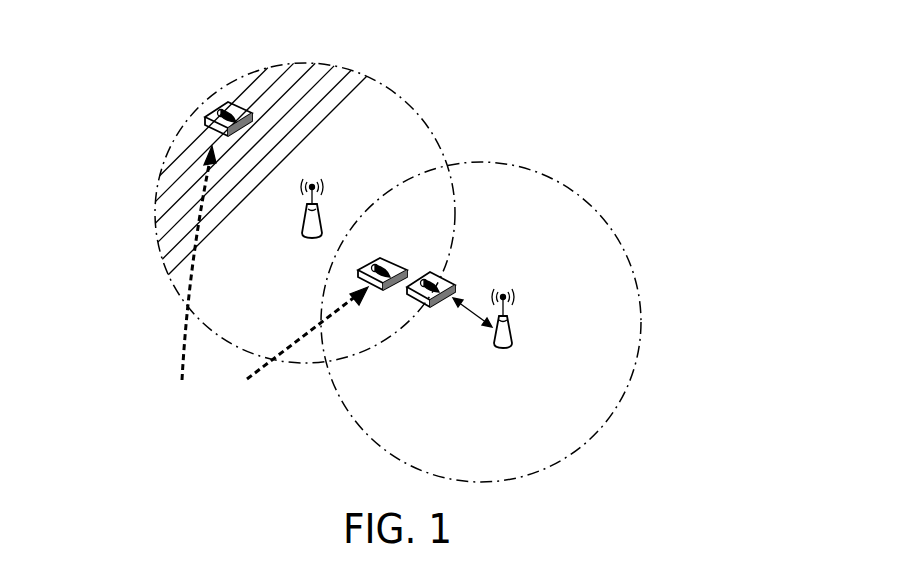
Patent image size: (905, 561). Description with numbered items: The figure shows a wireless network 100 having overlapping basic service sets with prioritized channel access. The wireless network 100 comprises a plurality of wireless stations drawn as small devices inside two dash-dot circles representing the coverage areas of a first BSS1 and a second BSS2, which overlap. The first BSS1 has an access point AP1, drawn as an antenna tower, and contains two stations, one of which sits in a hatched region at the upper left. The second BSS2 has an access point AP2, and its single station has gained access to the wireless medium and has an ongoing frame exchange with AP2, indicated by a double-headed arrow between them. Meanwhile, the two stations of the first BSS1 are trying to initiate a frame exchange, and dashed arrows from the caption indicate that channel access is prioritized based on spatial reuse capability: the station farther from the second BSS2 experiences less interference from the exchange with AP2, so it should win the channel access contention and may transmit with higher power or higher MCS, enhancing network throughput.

The wireless network 100 is at (789, 70).
The access point AP1 is at (311, 198).
The access point AP2 is at (524, 318).
The first BSS BSS1 is at (255, 280).
The second BSS BSS2 is at (474, 426).